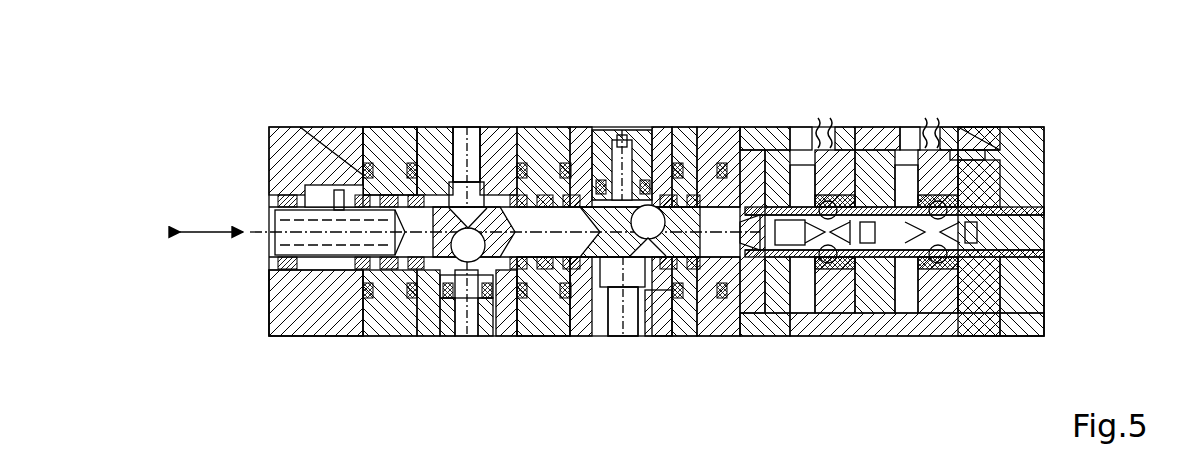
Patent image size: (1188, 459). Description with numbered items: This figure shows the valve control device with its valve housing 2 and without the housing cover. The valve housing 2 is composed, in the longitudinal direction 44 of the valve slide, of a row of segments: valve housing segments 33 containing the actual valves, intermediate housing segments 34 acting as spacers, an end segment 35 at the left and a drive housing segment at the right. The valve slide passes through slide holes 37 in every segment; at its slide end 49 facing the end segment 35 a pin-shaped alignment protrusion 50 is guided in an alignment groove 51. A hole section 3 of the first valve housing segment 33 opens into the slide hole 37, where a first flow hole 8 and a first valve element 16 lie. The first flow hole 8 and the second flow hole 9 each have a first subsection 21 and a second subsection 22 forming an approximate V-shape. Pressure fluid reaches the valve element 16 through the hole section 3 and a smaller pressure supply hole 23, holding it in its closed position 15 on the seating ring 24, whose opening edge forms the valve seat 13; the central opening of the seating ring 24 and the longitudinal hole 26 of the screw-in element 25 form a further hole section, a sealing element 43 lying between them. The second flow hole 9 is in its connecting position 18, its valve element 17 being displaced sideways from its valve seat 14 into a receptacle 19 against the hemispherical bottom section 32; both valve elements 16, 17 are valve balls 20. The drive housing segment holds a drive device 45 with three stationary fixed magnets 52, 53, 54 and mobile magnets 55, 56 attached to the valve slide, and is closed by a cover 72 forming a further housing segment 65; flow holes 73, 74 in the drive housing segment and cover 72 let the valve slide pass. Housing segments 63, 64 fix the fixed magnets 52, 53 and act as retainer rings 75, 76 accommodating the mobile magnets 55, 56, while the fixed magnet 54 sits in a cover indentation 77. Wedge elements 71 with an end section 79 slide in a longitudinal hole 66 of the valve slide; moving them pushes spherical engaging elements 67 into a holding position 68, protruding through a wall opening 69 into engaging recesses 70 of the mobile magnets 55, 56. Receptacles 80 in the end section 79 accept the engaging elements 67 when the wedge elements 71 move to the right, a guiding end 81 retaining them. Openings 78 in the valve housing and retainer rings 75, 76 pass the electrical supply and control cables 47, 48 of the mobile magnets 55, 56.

The valve housing 2 is at (1065, 95).
The hole section 3 is at (468, 165).
The first flow hole 8 is at (545, 194).
The second flow hole 9 is at (603, 317).
The valve seat 13 is at (490, 330).
The valve seat 14 is at (622, 130).
The closed position 15 is at (462, 117).
The first valve element 16 is at (462, 117).
The valve element 17 is at (648, 320).
The connecting position 18 is at (608, 330).
The receptacle 19 is at (384, 123).
The valve balls 20 is at (462, 170).
The first subsection 21 is at (545, 150).
The second subsection 22 is at (540, 300).
The pressure supply hole 23 is at (435, 150).
The seating ring 24 is at (430, 330).
The screw-in element 25 is at (448, 336).
The longitudinal hole 26 is at (468, 336).
The bottom section 32 is at (417, 160).
The valve housing segments 33 is at (505, 175).
The housing segments 34 is at (368, 336).
The end segment 35 is at (275, 298).
The slide holes 37 is at (305, 336).
The sealing element 43 is at (640, 160).
The longitudinal direction 44 is at (212, 230).
The drive device 45 is at (862, 122).
The electrical supply and control cable 47 is at (859, 100).
The electrical supply and control cable 48 is at (820, 100).
The slide end 49 is at (275, 240).
The alignment protrusion 50 is at (338, 190).
The alignment groove 51 is at (336, 192).
The stationary fixed magnet 52 is at (765, 336).
The stationary fixed magnet 53 is at (830, 336).
The stationary fixed magnet 54 is at (1010, 336).
The mobile magnet 55 is at (795, 336).
The mobile magnet 56 is at (920, 336).
The housing segment 63 is at (733, 135).
The housing segment 64 is at (860, 336).
The housing segment 65 is at (955, 323).
The longitudinal hole 66 is at (1045, 243).
The engaging elements 67 is at (1039, 231).
The holding position 68 is at (1020, 176).
The wall opening 69 is at (950, 336).
The engaging recesses 70 is at (985, 163).
The wedge elements 71 is at (975, 336).
The cover 72 is at (1040, 318).
The flow hole 73 is at (728, 336).
The flow hole 74 is at (1045, 211).
The retainer ring 75 is at (852, 160).
The retainer ring 76 is at (990, 148).
The cover indentation 77 is at (1045, 282).
The openings 78 is at (803, 135).
The end section 79 is at (880, 336).
The receptacles 80 is at (886, 165).
The guiding end 81 is at (770, 160).